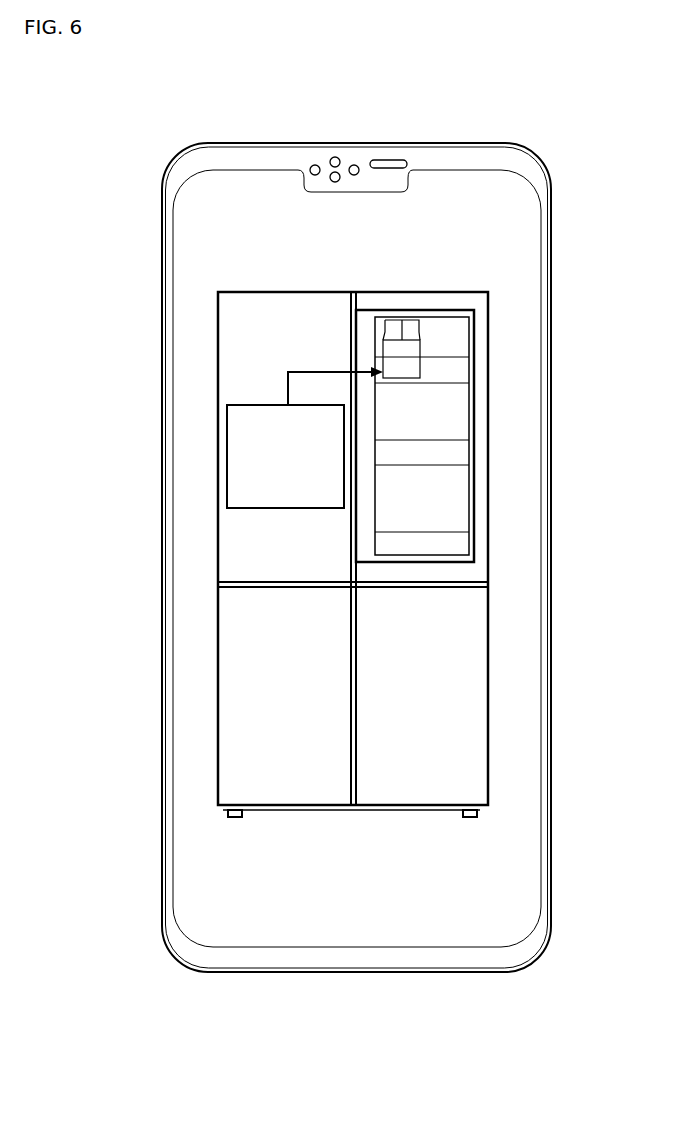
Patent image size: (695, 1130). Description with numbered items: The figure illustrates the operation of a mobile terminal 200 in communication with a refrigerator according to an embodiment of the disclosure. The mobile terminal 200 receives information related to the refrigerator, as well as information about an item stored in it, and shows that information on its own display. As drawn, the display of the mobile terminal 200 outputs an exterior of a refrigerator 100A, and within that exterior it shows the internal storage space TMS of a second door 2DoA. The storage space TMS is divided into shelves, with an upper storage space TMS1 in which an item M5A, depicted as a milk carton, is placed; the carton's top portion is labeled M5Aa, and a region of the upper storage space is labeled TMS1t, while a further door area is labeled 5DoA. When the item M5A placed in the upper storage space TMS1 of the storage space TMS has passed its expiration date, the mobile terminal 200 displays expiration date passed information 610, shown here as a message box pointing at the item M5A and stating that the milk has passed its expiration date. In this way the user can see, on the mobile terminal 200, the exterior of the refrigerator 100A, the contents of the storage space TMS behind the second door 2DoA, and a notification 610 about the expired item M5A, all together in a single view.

The mobile terminal 200 is at (350, 136).
The exterior of a refrigerator 100A is at (488, 732).
The internal storage space TMS is at (460, 332).
The upper storage space TMS1 is at (458, 340).
The transparent display screen top TMS1t is at (460, 373).
The fifth door area 5DoA is at (476, 333).
The second door 2DoA is at (483, 480).
The item M5A is at (382, 347).
The milk object top portion M5Aa is at (400, 327).
The expiration date passed information 610 is at (227, 432).